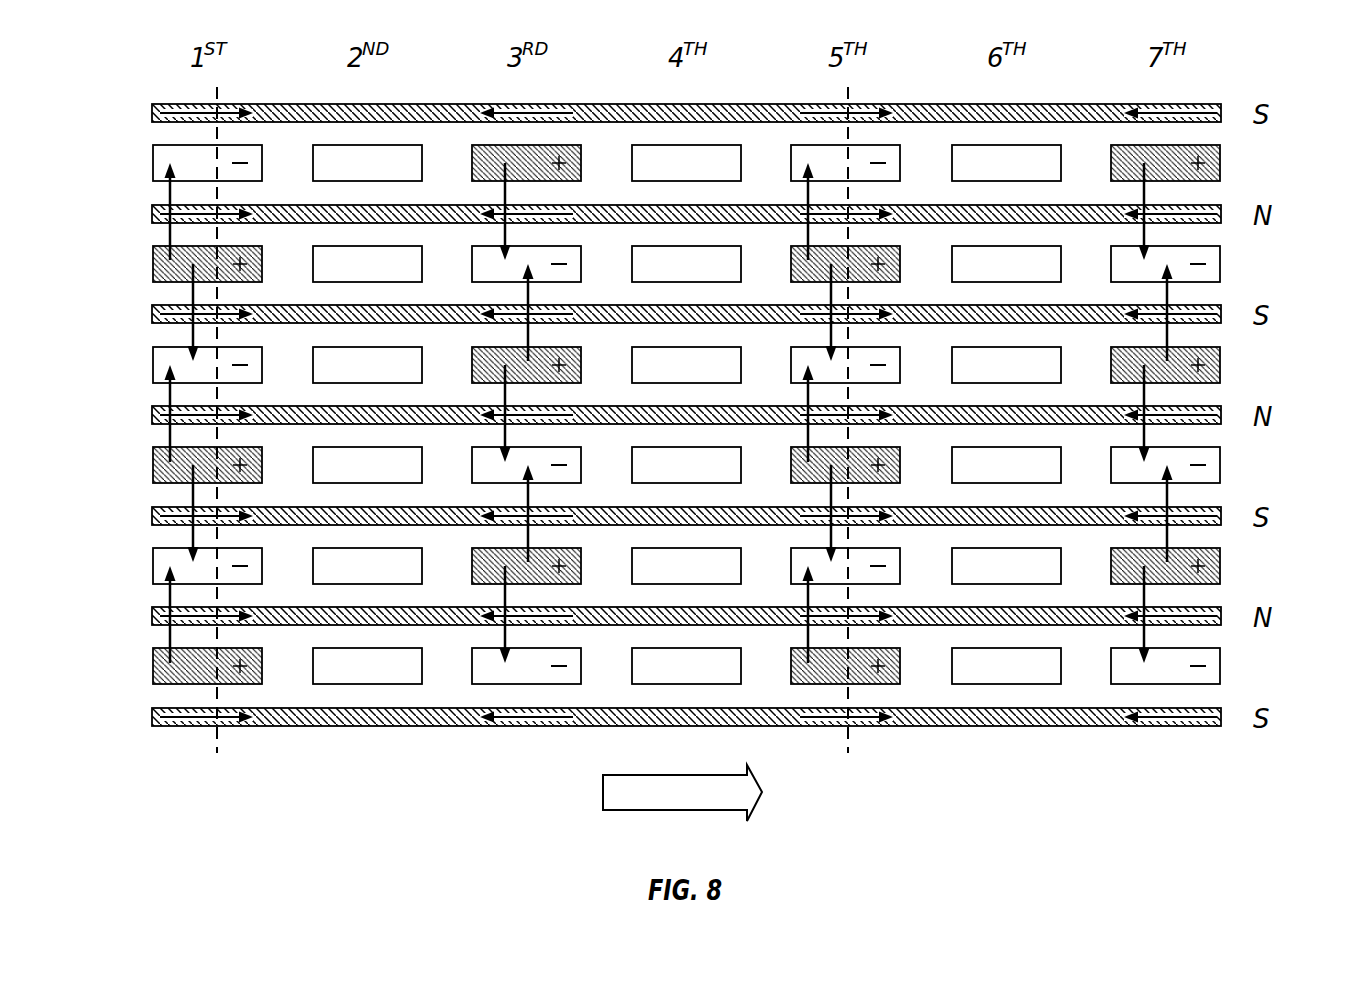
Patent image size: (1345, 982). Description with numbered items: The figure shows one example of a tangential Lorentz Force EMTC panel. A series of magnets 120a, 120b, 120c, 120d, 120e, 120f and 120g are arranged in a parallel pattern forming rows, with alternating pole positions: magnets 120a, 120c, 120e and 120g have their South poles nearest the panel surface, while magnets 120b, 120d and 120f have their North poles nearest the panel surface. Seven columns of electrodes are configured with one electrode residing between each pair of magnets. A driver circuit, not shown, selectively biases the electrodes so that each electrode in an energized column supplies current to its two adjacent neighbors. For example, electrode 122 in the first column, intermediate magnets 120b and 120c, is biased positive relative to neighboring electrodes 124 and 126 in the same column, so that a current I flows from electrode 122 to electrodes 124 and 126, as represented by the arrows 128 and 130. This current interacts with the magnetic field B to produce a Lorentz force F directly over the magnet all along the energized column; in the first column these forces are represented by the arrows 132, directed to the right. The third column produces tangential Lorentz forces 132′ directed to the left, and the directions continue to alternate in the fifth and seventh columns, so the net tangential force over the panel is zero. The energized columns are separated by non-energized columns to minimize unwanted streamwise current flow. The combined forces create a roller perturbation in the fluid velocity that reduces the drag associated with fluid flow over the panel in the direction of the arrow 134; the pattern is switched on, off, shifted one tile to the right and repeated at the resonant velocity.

The magnet 120a is at (741, 92).
The magnet 120b is at (741, 193).
The magnet 120c is at (741, 293).
The magnet 120d is at (741, 394).
The magnet 120e is at (741, 495).
The magnet 120f is at (743, 595).
The magnet 120g is at (741, 696).
The electrode 122 is at (168, 252).
The electrode 124 is at (168, 151).
The electrode 126 is at (168, 353).
The arrow 128 is at (236, 211).
The arrow 130 is at (247, 312).
The tangential Lorentz forces 132 is at (489, 398).
The tangential Lorentz forces 132′ is at (560, 110).
The arrow 134 is at (657, 809).